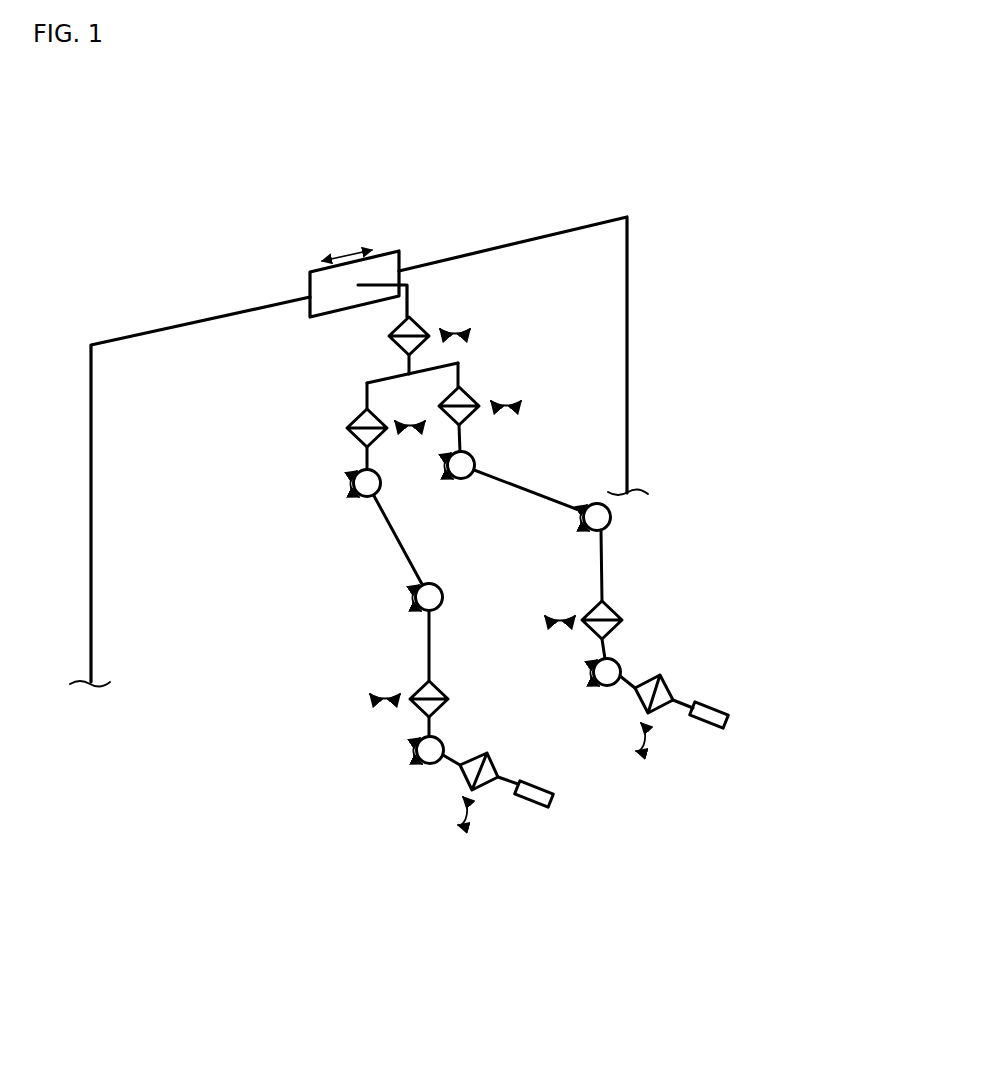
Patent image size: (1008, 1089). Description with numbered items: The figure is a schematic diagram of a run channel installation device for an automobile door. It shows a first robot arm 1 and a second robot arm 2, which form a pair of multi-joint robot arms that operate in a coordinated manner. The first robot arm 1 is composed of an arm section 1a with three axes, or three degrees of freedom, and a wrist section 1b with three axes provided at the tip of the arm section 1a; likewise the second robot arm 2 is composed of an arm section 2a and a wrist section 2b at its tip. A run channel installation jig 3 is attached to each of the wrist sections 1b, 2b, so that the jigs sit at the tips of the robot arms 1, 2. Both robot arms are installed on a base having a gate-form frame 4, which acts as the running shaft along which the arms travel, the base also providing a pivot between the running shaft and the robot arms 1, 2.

The first robot arm 1 is at (632, 525).
The arm section 1a is at (511, 475).
The wrist section 1b is at (643, 665).
The second robot arm 2 is at (356, 571).
The arm section 2a is at (418, 556).
The wrist section 2b is at (463, 741).
The run channel installation jig 3 is at (705, 723).
The gate-form frame 4 is at (427, 263).